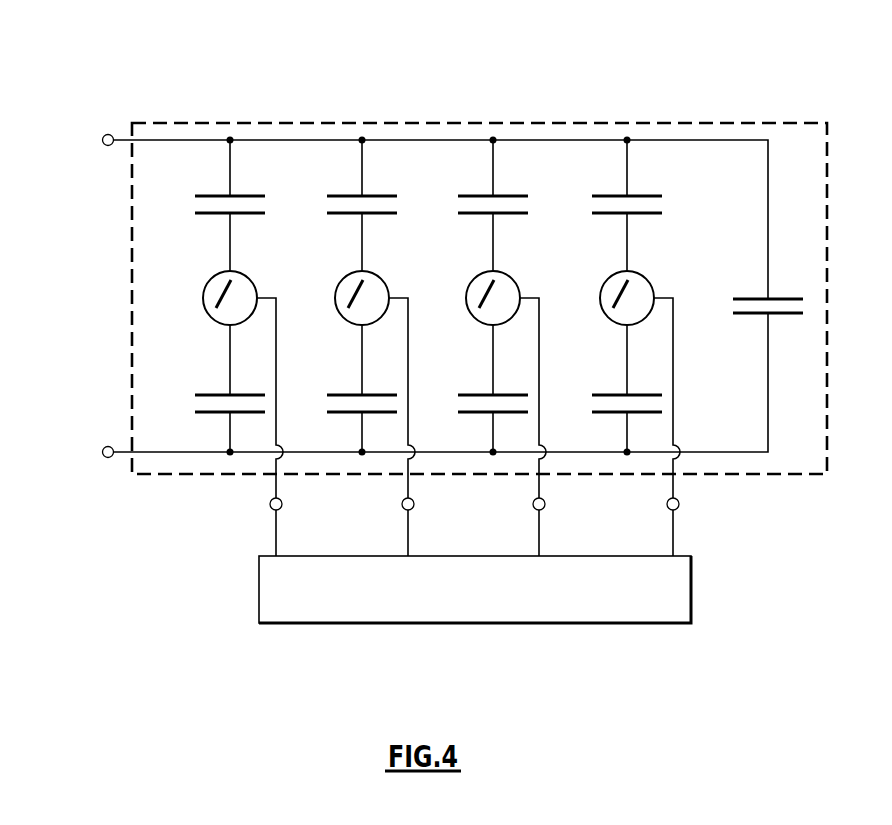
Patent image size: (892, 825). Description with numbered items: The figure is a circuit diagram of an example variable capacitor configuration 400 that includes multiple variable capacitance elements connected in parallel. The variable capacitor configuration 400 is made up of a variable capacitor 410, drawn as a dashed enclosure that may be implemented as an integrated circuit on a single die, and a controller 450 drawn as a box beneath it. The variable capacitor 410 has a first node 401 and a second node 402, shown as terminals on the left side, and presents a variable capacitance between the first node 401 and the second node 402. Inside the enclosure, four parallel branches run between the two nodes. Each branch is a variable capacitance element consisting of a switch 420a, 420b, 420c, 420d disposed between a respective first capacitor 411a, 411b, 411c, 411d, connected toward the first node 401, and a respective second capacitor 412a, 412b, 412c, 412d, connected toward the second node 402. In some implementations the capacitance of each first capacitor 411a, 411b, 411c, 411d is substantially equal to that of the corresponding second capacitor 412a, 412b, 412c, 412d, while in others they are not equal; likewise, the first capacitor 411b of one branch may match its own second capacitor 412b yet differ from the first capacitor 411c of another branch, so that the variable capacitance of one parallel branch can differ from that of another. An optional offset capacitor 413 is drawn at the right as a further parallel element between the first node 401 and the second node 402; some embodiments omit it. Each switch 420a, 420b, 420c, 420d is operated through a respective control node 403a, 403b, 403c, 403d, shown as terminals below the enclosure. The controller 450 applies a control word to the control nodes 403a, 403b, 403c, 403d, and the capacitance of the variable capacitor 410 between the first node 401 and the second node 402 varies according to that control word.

The variable capacitor configuration 400 is at (212, 98).
The variable capacitor 410 is at (477, 123).
The first node 401 is at (102, 140).
The second node 402 is at (102, 452).
The first capacitor 411a is at (208, 214).
The first capacitor 411b is at (340, 214).
The first capacitor 411c is at (470, 214).
The first capacitor 411d is at (605, 214).
The second capacitor 412a is at (210, 413).
The second capacitor 412b is at (355, 413).
The second capacitor 412c is at (485, 413).
The second capacitor 412d is at (620, 413).
The switch 420a is at (207, 304).
The switch 420b is at (341, 305).
The switch 420c is at (472, 305).
The switch 420d is at (606, 305).
The control node 403a is at (270, 504).
The control node 403b is at (402, 504).
The control node 403c is at (533, 504).
The control node 403d is at (667, 504).
The offset capacitor 413 is at (755, 298).
The controller 450 is at (343, 624).